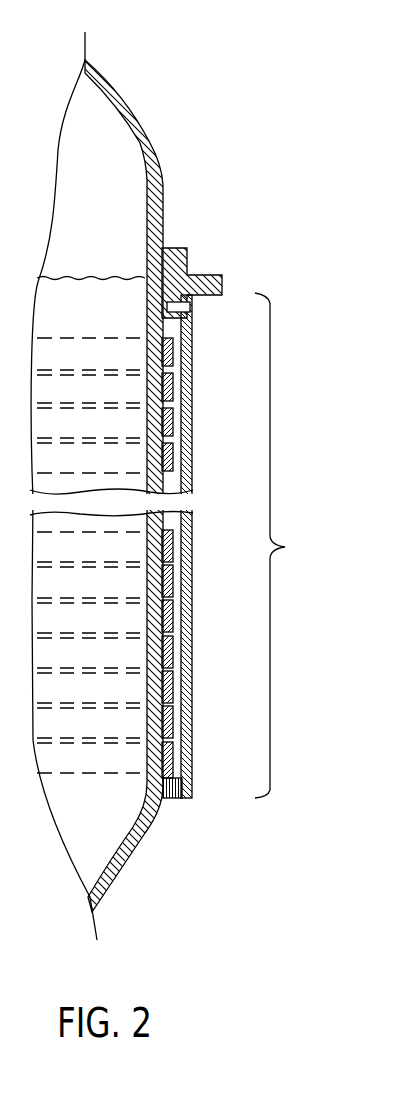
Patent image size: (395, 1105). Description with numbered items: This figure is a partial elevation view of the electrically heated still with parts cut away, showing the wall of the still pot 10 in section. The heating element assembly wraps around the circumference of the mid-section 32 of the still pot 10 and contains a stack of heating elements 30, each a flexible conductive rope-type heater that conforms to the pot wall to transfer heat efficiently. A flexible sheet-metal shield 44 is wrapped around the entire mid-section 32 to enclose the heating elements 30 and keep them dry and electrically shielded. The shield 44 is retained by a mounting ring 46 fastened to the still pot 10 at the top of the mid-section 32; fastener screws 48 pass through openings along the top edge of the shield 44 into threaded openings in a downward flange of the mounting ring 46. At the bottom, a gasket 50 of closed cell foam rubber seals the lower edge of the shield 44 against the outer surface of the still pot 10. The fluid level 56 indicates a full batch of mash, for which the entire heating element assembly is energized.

The still pot 10 is at (151, 143).
The heating elements 30 is at (174, 457).
The mid-section 32 is at (281, 545).
The shield 44 is at (193, 470).
The mounting ring 46 is at (187, 266).
The fastener screws 48 is at (190, 305).
The gasket 50 is at (173, 800).
The fluid level 56 is at (67, 277).